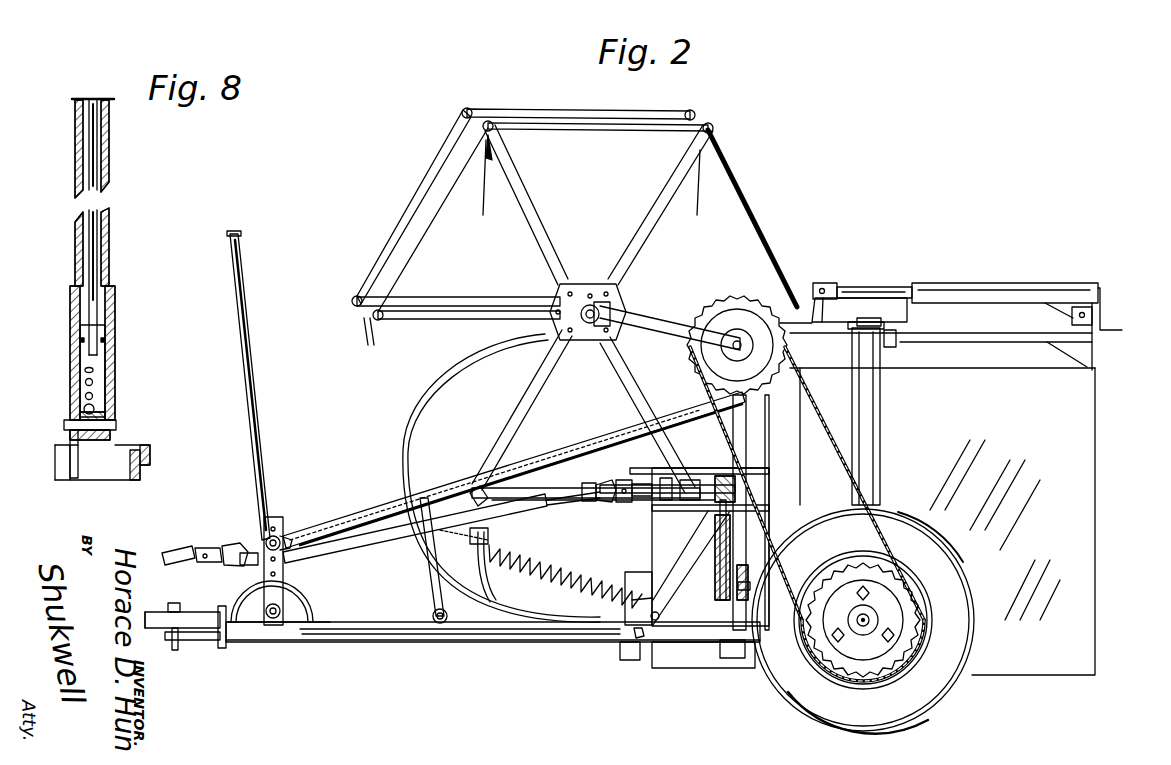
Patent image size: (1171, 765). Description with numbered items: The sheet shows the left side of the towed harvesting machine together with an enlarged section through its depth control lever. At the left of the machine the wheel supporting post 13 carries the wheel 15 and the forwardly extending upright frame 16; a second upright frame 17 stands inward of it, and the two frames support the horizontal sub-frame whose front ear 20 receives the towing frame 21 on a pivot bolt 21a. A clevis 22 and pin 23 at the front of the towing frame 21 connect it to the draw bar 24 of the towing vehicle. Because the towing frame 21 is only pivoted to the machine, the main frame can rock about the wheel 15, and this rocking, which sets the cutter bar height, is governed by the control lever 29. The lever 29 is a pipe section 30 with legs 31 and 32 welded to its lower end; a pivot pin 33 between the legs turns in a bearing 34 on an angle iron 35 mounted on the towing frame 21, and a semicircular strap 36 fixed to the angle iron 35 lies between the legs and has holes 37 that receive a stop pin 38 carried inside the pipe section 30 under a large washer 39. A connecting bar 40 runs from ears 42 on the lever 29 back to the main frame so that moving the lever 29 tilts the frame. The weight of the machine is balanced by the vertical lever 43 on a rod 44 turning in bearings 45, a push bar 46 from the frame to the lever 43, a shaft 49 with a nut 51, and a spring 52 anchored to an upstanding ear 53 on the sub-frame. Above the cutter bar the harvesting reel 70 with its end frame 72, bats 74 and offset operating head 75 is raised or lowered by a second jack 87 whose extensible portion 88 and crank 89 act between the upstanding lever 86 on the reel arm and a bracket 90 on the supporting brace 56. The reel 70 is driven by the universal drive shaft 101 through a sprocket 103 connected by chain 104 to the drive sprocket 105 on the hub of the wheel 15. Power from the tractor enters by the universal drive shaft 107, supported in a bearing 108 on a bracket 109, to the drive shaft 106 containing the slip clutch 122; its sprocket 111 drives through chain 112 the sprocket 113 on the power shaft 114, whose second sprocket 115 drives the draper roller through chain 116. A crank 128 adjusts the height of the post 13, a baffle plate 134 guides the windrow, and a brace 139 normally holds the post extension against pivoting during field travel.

In FIG. 2, the wheel supporting post 13 is at (882, 445).
In FIG. 2, the wheel 15 is at (934, 552).
In FIG. 2, the upright frame 16 is at (766, 466).
In FIG. 2, the second upright frame 17 is at (686, 530).
In FIG. 2, the ear 20 is at (636, 640).
In FIG. 8, the towing frame 21 is at (124, 470).
In FIG. 2, the towing frame 21 is at (483, 632).
In FIG. 2, the bolt 21a is at (640, 662).
In FIG. 2, the clevis 22 is at (206, 640).
In FIG. 2, the pin 23 is at (182, 603).
In FIG. 2, the draw bar 24 is at (150, 612).
In FIG. 2, the control lever 29 is at (262, 392).
In FIG. 8, the pipe section 30 is at (110, 222).
In FIG. 8, the leg 31 is at (68, 324).
In FIG. 8, the leg 32 is at (115, 322).
In FIG. 2, the leg 32 is at (262, 541).
In FIG. 8, the pivot pin 33 is at (118, 424).
In FIG. 8, the bearing 34 is at (112, 406).
In FIG. 8, the angle iron 35 is at (78, 464).
In FIG. 8, the semicircular strap 36 is at (100, 378).
In FIG. 2, the semicircular strap 36 is at (232, 584).
In FIG. 8, the hole 37 is at (84, 395).
In FIG. 8, the stop pin 38 is at (97, 268).
In FIG. 8, the washer 39 is at (82, 99).
In FIG. 2, the connecting bar 40 is at (388, 495).
In FIG. 2, the ear 42 is at (286, 538).
In FIG. 2, the vertical lever 43 is at (433, 580).
In FIG. 2, the rod 44 is at (428, 610).
In FIG. 2, the bearing 45 is at (420, 640).
In FIG. 2, the push bar 46 is at (598, 436).
In FIG. 2, the shaft 49 is at (478, 548).
In FIG. 2, the nut 51 is at (488, 562).
In FIG. 2, the spring 52 is at (564, 554).
In FIG. 2, the ear 53 is at (662, 615).
In FIG. 2, the supporting brace 56 is at (1096, 366).
In FIG. 2, the harvesting reel 70 is at (577, 117).
In FIG. 2, the end frame 72 is at (422, 252).
In FIG. 2, the reel bat 74 is at (366, 332).
In FIG. 2, the offset operating head 75 is at (390, 218).
In FIG. 2, the upstanding lever 86 is at (812, 298).
In FIG. 2, the second jack 87 is at (1030, 296).
In FIG. 2, the extensible portion 88 is at (878, 290).
In FIG. 2, the crank 89 is at (1112, 318).
In FIG. 2, the bracket 90 is at (1094, 345).
In FIG. 2, the universal drive shaft 101 is at (672, 341).
In FIG. 2, the sprocket 103 is at (740, 318).
In FIG. 2, the chain 104 is at (824, 424).
In FIG. 2, the drive sprocket 105 is at (912, 630).
In FIG. 2, the drive shaft 106 is at (710, 476).
In FIG. 2, the universal drive shaft 107 is at (380, 540).
In FIG. 2, the bearing 108 is at (305, 566).
In FIG. 2, the bracket 109 is at (283, 598).
In FIG. 2, the sprocket 111 is at (745, 490).
In FIG. 2, the chain 112 is at (718, 536).
In FIG. 2, the sprocket 113 is at (718, 600).
In FIG. 2, the power shaft 114 is at (660, 590).
In FIG. 2, the second sprocket 115 is at (750, 594).
In FIG. 2, the chain 116 is at (752, 568).
In FIG. 2, the slip clutch 122 is at (660, 468).
In FIG. 2, the crank 128 is at (911, 312).
In FIG. 2, the baffle plate 134 is at (947, 521).
In FIG. 2, the brace 139 is at (698, 642).